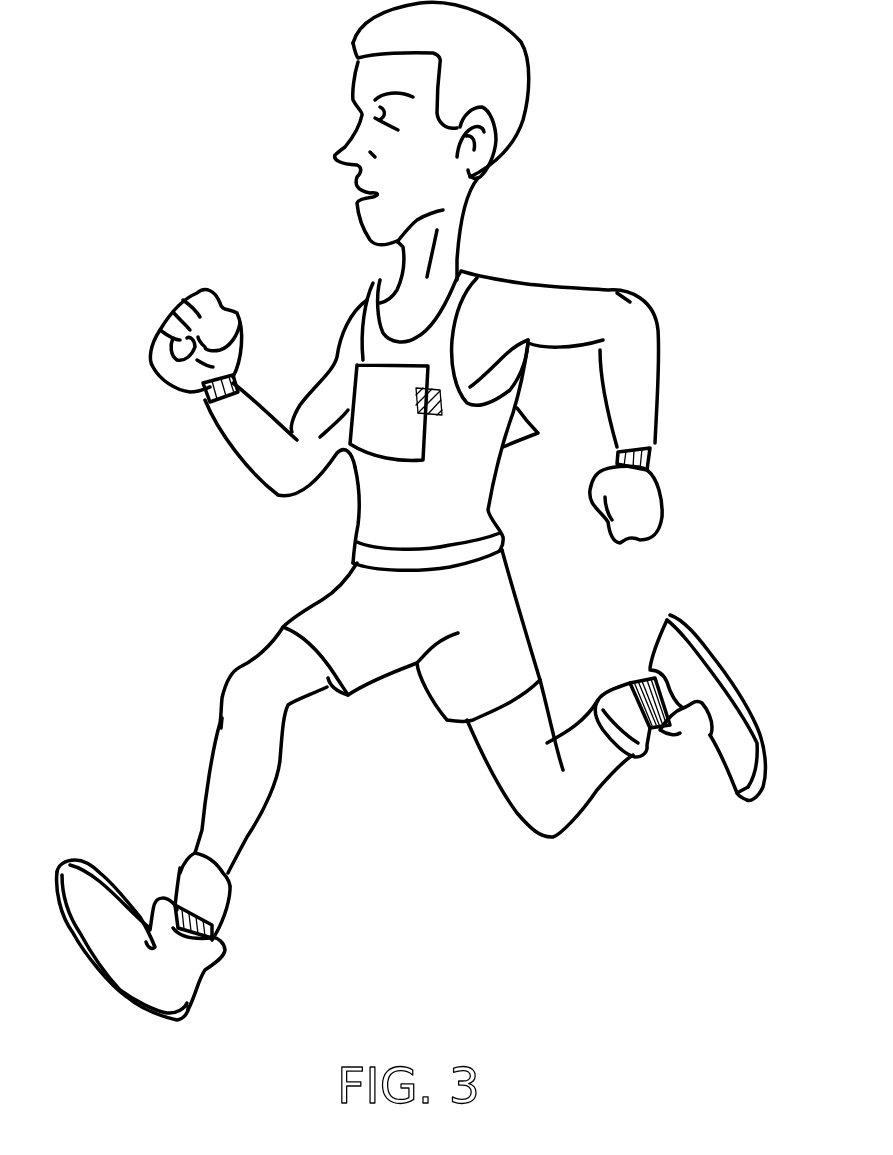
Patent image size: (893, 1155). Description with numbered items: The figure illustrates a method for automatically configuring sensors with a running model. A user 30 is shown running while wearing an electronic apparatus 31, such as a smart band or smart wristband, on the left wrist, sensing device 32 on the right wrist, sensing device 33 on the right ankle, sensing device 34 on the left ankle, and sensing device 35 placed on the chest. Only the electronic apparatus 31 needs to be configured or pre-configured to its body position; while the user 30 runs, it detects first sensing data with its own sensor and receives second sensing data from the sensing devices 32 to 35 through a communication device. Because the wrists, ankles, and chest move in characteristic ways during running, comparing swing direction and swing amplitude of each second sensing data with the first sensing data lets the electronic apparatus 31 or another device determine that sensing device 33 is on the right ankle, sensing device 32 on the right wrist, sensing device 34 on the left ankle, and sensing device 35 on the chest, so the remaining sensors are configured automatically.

The user 30 is at (520, 617).
The electronic apparatus 31 is at (647, 460).
The sensing device 32 is at (207, 393).
The sensing device 33 is at (667, 733).
The sensing device 34 is at (217, 933).
The sensing device 35 is at (415, 400).